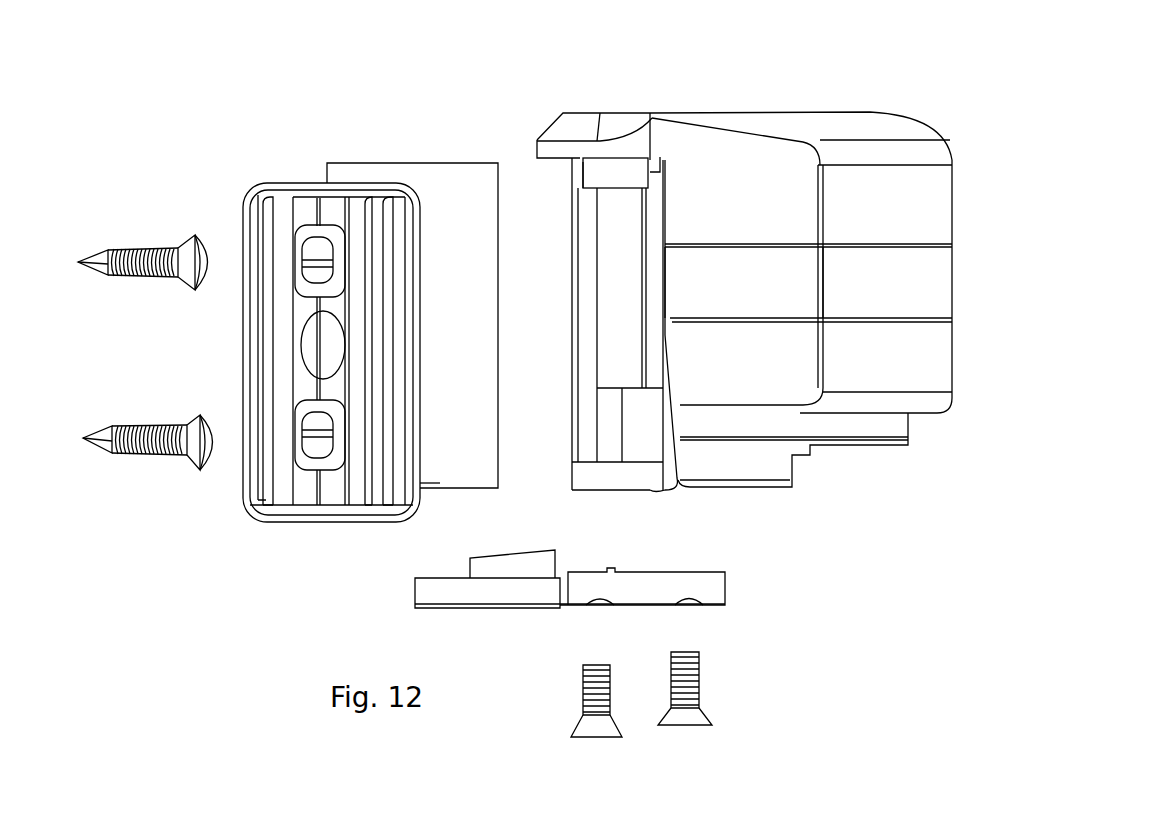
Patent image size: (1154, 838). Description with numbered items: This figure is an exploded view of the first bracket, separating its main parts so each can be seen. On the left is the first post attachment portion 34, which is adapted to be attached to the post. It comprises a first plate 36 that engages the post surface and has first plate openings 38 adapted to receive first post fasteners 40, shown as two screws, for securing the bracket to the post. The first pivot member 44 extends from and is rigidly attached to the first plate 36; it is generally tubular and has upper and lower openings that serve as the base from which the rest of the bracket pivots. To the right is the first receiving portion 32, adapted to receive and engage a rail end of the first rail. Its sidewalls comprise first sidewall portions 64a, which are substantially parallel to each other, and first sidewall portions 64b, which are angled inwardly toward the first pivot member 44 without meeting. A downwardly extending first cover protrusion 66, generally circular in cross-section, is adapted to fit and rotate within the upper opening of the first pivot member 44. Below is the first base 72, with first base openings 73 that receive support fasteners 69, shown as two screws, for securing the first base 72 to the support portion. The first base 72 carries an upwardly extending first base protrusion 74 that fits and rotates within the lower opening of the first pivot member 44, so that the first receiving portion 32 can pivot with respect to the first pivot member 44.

The first receiving portion 32 is at (737, 246).
The first post attachment portion 34 is at (326, 308).
The first plate 36 is at (382, 488).
The first plate openings 38 is at (320, 245).
The first post fasteners 40 is at (148, 250).
The first pivot member 44 is at (458, 183).
The first sidewall portions 64a is at (905, 231).
The first sidewall portions 64b is at (760, 233).
The first cover protrusion 66 is at (600, 172).
The support fasteners 69 is at (583, 700).
The first base 72 is at (614, 589).
The first base openings 73 is at (600, 607).
The first base protrusion 74 is at (512, 567).